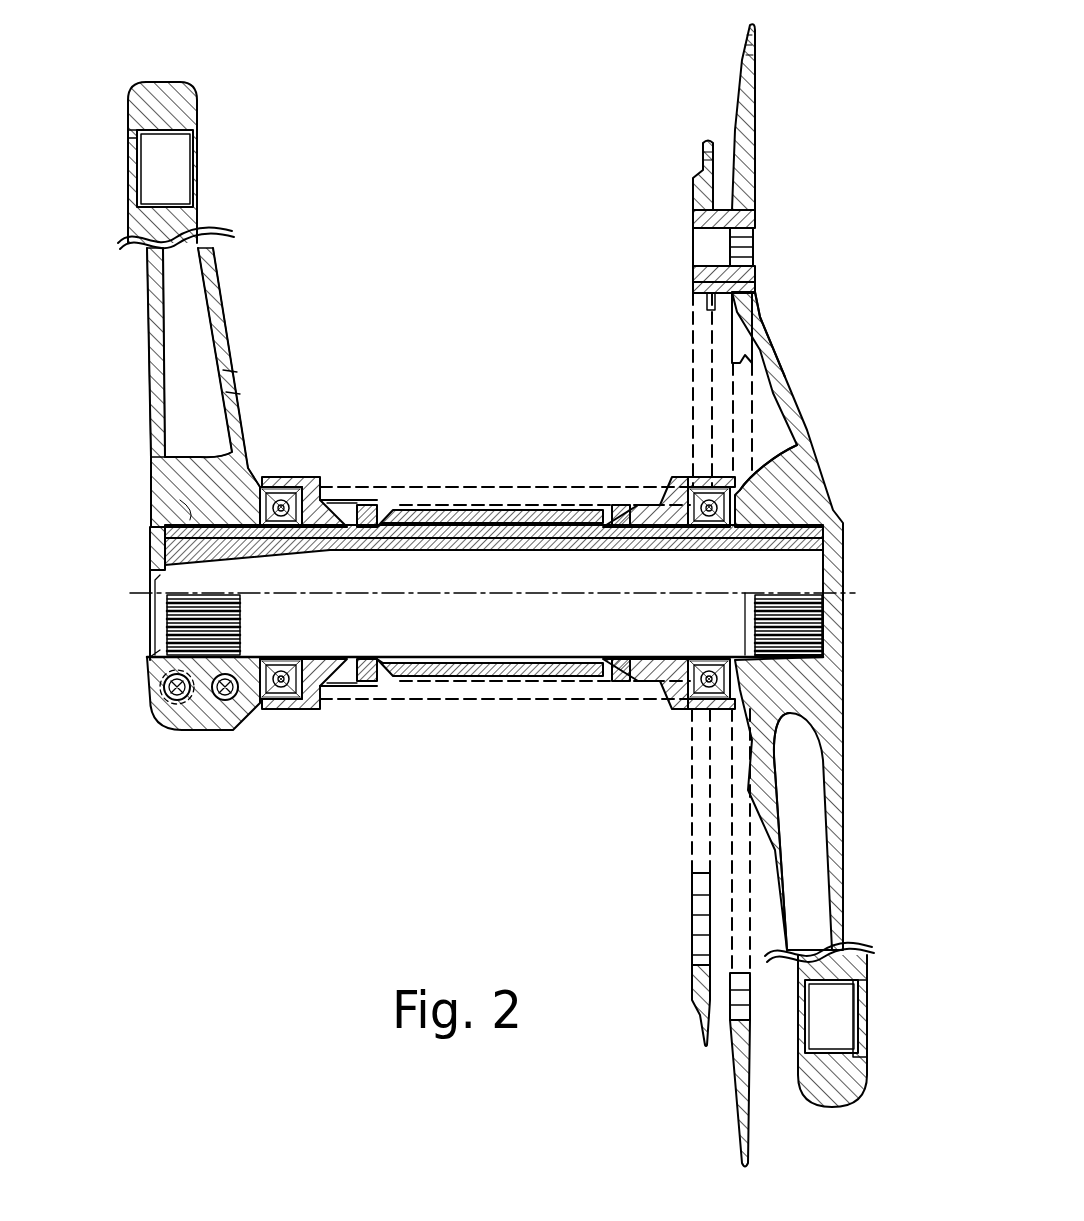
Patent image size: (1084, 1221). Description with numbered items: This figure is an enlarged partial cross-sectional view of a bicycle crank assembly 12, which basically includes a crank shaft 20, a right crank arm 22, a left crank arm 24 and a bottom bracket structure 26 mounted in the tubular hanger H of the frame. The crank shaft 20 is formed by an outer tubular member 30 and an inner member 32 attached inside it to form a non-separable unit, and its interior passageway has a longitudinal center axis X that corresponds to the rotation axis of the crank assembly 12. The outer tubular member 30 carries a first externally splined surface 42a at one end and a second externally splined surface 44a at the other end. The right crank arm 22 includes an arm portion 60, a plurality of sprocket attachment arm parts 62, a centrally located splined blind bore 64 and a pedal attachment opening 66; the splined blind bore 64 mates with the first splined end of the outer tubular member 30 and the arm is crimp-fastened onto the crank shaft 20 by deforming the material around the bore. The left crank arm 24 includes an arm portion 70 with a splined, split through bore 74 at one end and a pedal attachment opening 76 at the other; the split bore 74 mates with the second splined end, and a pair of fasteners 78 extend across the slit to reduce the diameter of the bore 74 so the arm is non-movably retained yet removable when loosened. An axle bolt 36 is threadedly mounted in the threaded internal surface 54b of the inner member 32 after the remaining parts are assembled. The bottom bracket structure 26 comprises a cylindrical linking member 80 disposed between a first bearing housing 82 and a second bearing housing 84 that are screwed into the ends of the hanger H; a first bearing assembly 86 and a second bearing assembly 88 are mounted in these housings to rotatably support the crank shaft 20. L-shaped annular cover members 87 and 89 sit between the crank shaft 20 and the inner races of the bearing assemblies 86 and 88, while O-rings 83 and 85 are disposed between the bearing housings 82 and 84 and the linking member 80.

The crank assembly 12 is at (803, 328).
The crank shaft 20 is at (545, 657).
The right crank arm 22 is at (808, 425).
The left crank arm 24 is at (245, 320).
The bottom bracket structure 26 is at (405, 517).
The outer tubular member 30 is at (823, 525).
The inner member 32 is at (827, 542).
The axle bolt 36 is at (150, 550).
The first externally splined surface 42a is at (790, 620).
The second externally splined surface 44a is at (185, 615).
The threaded internal surface 54b is at (190, 515).
The arm portion 60 is at (827, 733).
The sprocket attachment arm parts 62 is at (780, 360).
The splined blind bore 64 is at (793, 650).
The pedal attachment opening 66 is at (825, 1045).
The arm portion 70 is at (233, 350).
The splined split through bore 74 is at (190, 645).
The pedal attachment opening 76 is at (173, 150).
The fasteners 78 is at (188, 730).
The cylindrical linking member 80 is at (393, 500).
The first bearing housing 82 is at (675, 483).
The O-ring 83 is at (627, 505).
The second bearing housing 84 is at (300, 480).
The O-ring 85 is at (360, 503).
The first bearing assembly 86 is at (694, 487).
The annular cover member 87 is at (760, 500).
The second bearing assembly 88 is at (267, 487).
The annular cover member 89 is at (205, 457).
The tubular hanger H is at (413, 698).
The longitudinal center axis X is at (455, 597).